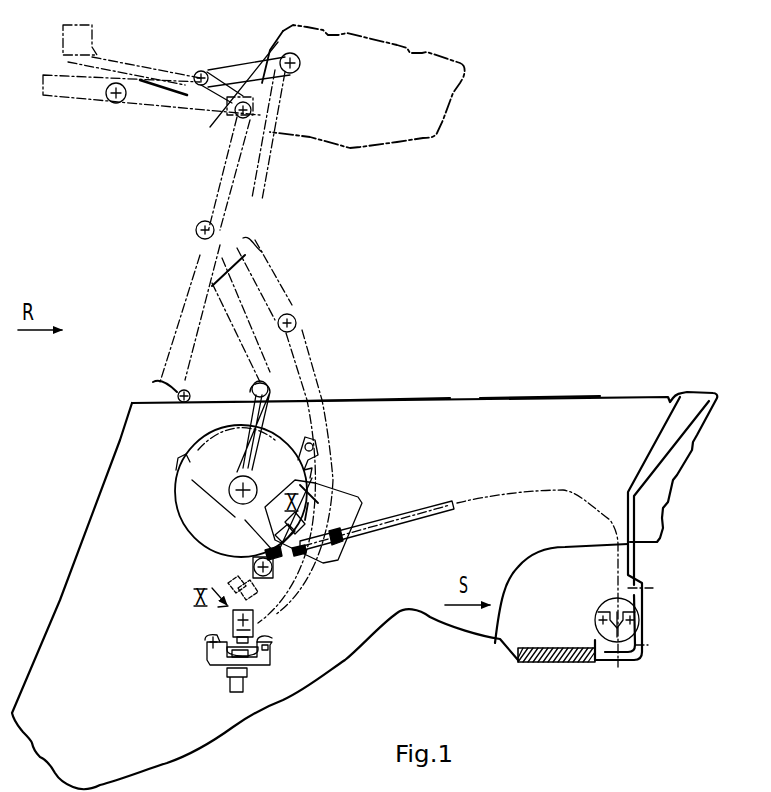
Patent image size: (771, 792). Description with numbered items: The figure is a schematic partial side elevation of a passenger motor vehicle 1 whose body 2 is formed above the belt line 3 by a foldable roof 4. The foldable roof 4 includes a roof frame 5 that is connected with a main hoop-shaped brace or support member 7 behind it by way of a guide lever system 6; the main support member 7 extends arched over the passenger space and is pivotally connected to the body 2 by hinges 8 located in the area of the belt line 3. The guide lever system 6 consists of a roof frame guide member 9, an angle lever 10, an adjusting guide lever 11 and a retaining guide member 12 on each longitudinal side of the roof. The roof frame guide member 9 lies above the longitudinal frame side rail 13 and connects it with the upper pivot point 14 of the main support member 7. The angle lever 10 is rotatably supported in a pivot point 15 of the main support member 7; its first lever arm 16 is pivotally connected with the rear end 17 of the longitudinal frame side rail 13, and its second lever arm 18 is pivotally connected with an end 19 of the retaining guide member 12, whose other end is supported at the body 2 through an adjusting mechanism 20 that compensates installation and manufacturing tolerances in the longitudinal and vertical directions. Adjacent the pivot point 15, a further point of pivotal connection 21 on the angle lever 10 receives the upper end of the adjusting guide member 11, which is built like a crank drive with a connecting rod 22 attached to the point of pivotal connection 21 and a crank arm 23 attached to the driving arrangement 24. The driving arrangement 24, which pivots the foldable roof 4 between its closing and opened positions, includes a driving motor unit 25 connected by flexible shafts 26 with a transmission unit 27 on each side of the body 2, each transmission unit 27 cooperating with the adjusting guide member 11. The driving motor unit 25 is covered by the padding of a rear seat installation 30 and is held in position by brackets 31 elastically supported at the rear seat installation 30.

The motor vehicle 1 is at (88, 421).
The body 2 is at (446, 394).
The belt line 3 is at (495, 400).
The foldable roof 4 is at (388, 150).
The roof frame 5 is at (73, 102).
The guide lever system 6 is at (262, 200).
The main hoop-shaped brace or support member 7 is at (195, 290).
The hinges 8 is at (178, 396).
The roof frame guide member 9 is at (235, 68).
The angle lever 10 is at (230, 185).
The adjusting guide lever 11 is at (250, 370).
The retaining guide member 12 is at (317, 373).
The longitudinal frame side rail 13 is at (158, 103).
The upper pivot point 14 is at (293, 73).
The pivot point 15 is at (262, 248).
The first lever arm 16 is at (223, 150).
The rear end 17 is at (217, 110).
The second lever arm 18 is at (263, 290).
The end 19 is at (300, 325).
The adjusting mechanism 20 is at (279, 649).
The further point of pivotal connection 21 is at (200, 224).
The connecting rod 22 is at (237, 323).
The crank arm 23 is at (232, 432).
The driving arrangement 24 is at (173, 513).
The driving motor unit 25 is at (595, 620).
The flexible shafts 26 is at (546, 488).
The transmission unit 27 is at (207, 527).
The rear seat installation 30 is at (595, 592).
The brackets 31 is at (627, 660).